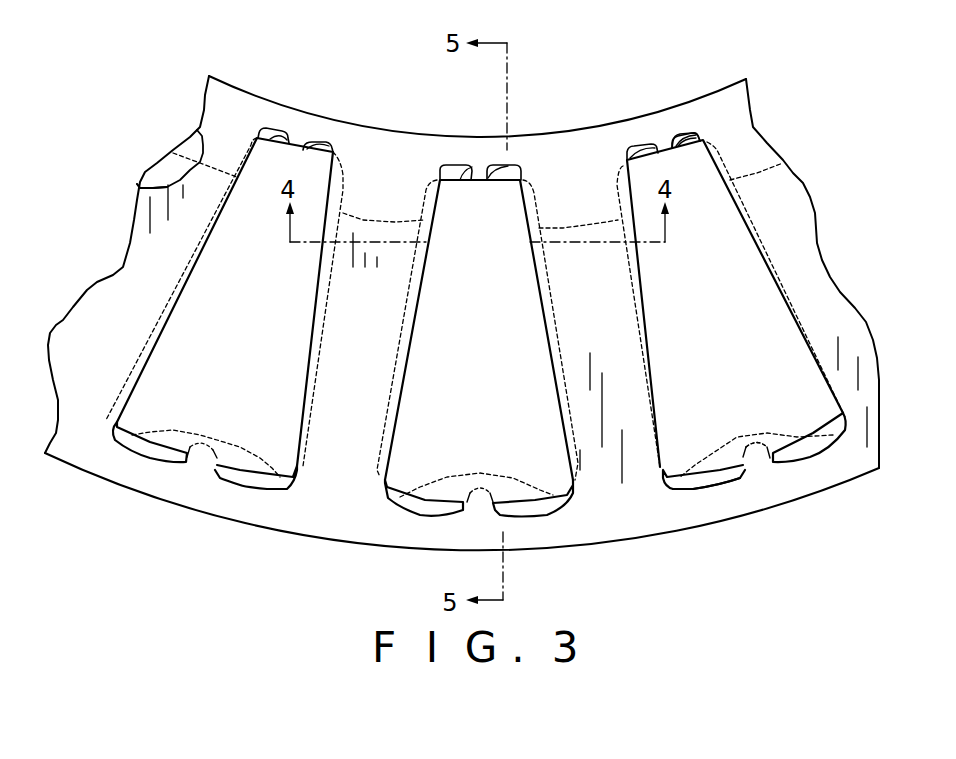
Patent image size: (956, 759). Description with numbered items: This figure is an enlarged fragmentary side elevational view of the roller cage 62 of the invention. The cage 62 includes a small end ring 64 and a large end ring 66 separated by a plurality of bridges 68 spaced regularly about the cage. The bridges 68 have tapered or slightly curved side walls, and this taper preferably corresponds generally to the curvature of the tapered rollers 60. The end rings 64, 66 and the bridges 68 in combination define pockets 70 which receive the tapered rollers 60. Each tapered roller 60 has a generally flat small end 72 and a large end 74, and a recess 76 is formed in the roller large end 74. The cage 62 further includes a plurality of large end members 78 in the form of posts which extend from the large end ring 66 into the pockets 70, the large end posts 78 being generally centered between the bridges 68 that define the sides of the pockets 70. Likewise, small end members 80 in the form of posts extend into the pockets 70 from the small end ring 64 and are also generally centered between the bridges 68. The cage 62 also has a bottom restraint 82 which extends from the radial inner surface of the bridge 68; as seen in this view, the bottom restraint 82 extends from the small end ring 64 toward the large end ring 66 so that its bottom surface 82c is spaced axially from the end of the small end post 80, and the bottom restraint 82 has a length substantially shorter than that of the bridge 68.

The tapered roller 60 is at (268, 130).
The cage 62 is at (313, 85).
The small end ring 64 is at (400, 133).
The large end ring 66 is at (325, 538).
The bridge 68 is at (203, 247).
The pocket 70 is at (316, 281).
The roller small end 72 is at (638, 153).
The roller large end 74 is at (693, 482).
The recess 76 is at (760, 436).
The large end post 78 is at (217, 453).
The small end post 80 is at (331, 150).
The bottom restraint 82 is at (197, 132).
The bottom surface 82c is at (140, 187).